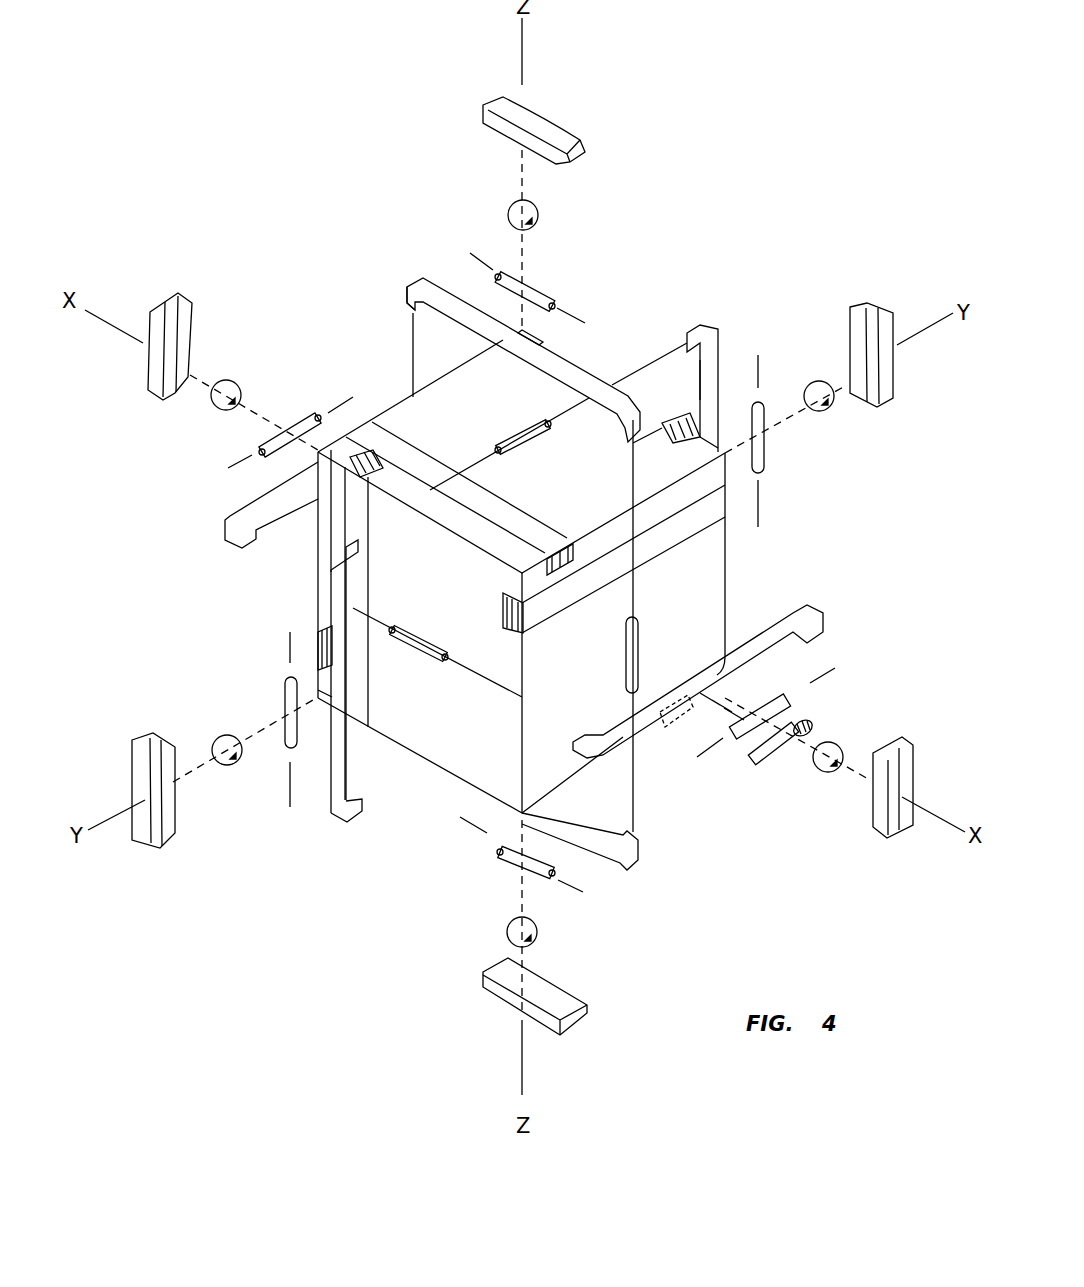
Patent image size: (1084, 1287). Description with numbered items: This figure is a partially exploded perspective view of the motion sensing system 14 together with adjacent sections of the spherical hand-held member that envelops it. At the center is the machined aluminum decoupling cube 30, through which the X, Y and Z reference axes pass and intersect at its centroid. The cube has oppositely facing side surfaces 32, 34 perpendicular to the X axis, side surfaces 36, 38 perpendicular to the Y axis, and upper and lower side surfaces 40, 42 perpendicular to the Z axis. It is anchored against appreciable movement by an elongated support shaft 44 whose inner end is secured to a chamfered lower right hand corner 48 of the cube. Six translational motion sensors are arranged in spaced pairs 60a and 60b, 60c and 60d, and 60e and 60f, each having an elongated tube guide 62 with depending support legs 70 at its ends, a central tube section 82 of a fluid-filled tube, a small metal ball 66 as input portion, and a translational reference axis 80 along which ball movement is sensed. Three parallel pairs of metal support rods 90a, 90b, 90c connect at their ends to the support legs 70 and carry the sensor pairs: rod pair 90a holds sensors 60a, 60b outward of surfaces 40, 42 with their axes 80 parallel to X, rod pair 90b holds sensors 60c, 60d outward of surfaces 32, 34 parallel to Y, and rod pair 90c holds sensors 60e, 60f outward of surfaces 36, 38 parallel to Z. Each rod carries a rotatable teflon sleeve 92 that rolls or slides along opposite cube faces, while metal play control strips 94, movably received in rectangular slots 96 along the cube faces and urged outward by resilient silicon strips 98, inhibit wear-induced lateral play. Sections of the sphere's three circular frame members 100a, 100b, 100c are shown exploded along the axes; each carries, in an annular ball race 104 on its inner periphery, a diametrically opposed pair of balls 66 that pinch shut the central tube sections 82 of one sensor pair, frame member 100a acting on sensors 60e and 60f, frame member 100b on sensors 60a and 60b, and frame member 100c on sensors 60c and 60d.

The motion sensing system 14 is at (810, 532).
The decoupling cube 30 is at (592, 358).
The side surface 32 is at (320, 608).
The side surface 34 is at (704, 611).
The side surface 36 is at (430, 706).
The side surface 38 is at (727, 552).
The upper side surface 40 is at (548, 491).
The lower side surface 42 is at (468, 792).
The support shaft 44 is at (812, 720).
The chamfered lower right hand corner 48 is at (724, 658).
The translational motion sensor 60a is at (501, 341).
The translational motion sensor 60b is at (637, 883).
The translational motion sensor 60c is at (215, 538).
The translational motion sensor 60d is at (848, 628).
The translational motion sensor 60e is at (330, 825).
The translational motion sensor 60f is at (718, 310).
The tube guide 62 is at (530, 368).
The metal ball 66 is at (538, 214).
The support legs 70 is at (404, 296).
The translational reference axis 80 is at (492, 268).
The central tube section 82 is at (530, 290).
The support rod pair 90a is at (412, 350).
The support rod pair 90b is at (505, 699).
The support rod pair 90c is at (570, 418).
The teflon sleeve 92 is at (515, 435).
The play control strip 94 is at (692, 415).
The slot 96 is at (370, 452).
The resilient silicon strip 98 is at (385, 462).
The circular frame member 100a is at (880, 305).
The circular frame member 100b is at (540, 108).
The circular frame member 100c is at (150, 395).
The annular ball race 104 is at (568, 162).